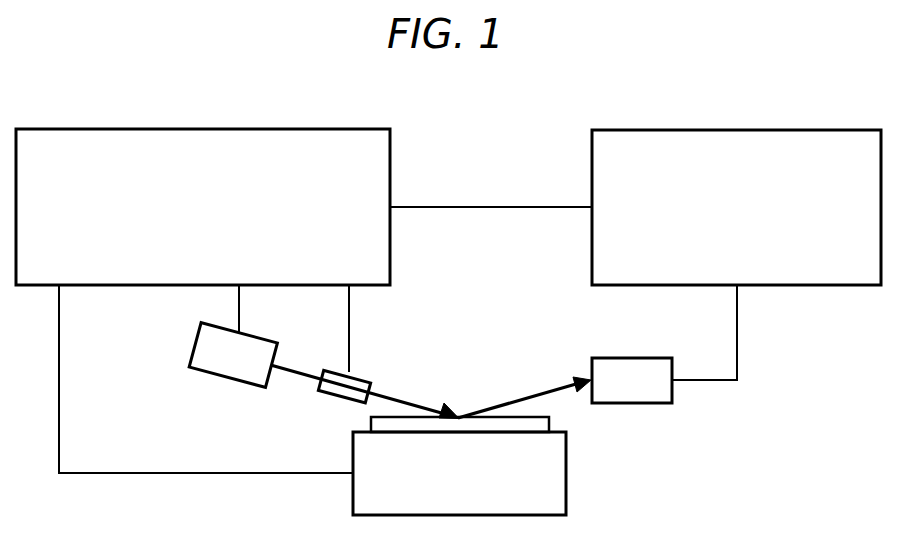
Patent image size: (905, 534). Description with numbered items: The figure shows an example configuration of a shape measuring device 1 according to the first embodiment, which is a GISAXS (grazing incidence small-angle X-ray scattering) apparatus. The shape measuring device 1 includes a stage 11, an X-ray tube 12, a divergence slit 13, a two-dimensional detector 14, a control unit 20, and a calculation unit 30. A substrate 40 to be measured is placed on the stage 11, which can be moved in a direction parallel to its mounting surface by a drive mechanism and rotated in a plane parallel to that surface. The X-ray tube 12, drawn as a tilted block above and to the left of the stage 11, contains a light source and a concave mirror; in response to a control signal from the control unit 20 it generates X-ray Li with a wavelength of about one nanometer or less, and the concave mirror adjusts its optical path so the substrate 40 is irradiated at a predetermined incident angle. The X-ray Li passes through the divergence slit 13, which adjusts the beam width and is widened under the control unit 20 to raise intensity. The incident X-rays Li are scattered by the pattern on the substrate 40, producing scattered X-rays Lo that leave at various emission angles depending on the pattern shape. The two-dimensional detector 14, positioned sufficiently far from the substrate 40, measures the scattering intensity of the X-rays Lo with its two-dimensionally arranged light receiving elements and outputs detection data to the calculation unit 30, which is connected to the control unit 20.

The shape measuring device 1 is at (496, 130).
The stage 11 is at (353, 497).
The X-ray tube 12 is at (198, 340).
The divergence slit 13 is at (336, 396).
The two-dimensional detector 14 is at (633, 358).
The control unit 20 is at (308, 108).
The calculation unit 30 is at (787, 130).
The substrate 40 is at (550, 424).
The X-ray Li is at (297, 374).
The scattered X-rays Lo is at (492, 410).